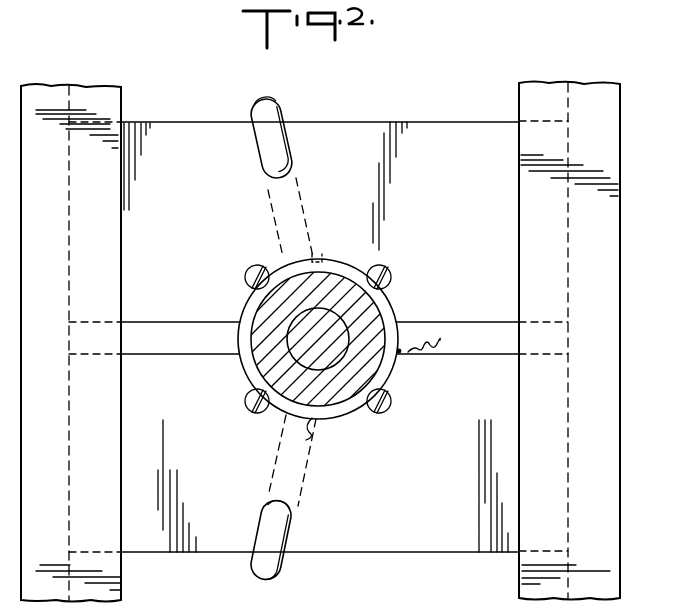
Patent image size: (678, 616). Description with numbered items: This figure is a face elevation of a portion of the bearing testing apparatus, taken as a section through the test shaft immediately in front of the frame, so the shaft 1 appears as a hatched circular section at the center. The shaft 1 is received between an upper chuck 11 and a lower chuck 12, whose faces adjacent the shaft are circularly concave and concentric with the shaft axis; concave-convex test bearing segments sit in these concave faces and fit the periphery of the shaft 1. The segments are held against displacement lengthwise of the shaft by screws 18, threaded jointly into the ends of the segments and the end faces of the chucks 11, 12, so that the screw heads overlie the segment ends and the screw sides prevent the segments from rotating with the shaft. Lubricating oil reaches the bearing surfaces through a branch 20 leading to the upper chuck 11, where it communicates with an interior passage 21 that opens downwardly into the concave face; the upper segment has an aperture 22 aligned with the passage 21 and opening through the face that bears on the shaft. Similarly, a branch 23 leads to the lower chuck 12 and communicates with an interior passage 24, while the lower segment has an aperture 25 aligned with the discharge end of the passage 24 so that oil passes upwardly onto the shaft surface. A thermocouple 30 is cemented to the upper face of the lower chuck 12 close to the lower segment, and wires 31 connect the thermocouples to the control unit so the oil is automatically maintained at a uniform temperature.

The shaft 1 is at (255, 328).
The upper chuck 11 is at (452, 137).
The lower chuck 12 is at (460, 543).
The screws 18 is at (246, 279).
The branch 20 is at (276, 108).
The passage 21 is at (294, 208).
The aperture 22 is at (318, 256).
The branch 23 is at (276, 577).
The interior passage 24 is at (277, 456).
The aperture 25 is at (312, 434).
The thermocouple 30 is at (399, 351).
The wires 31 is at (438, 343).